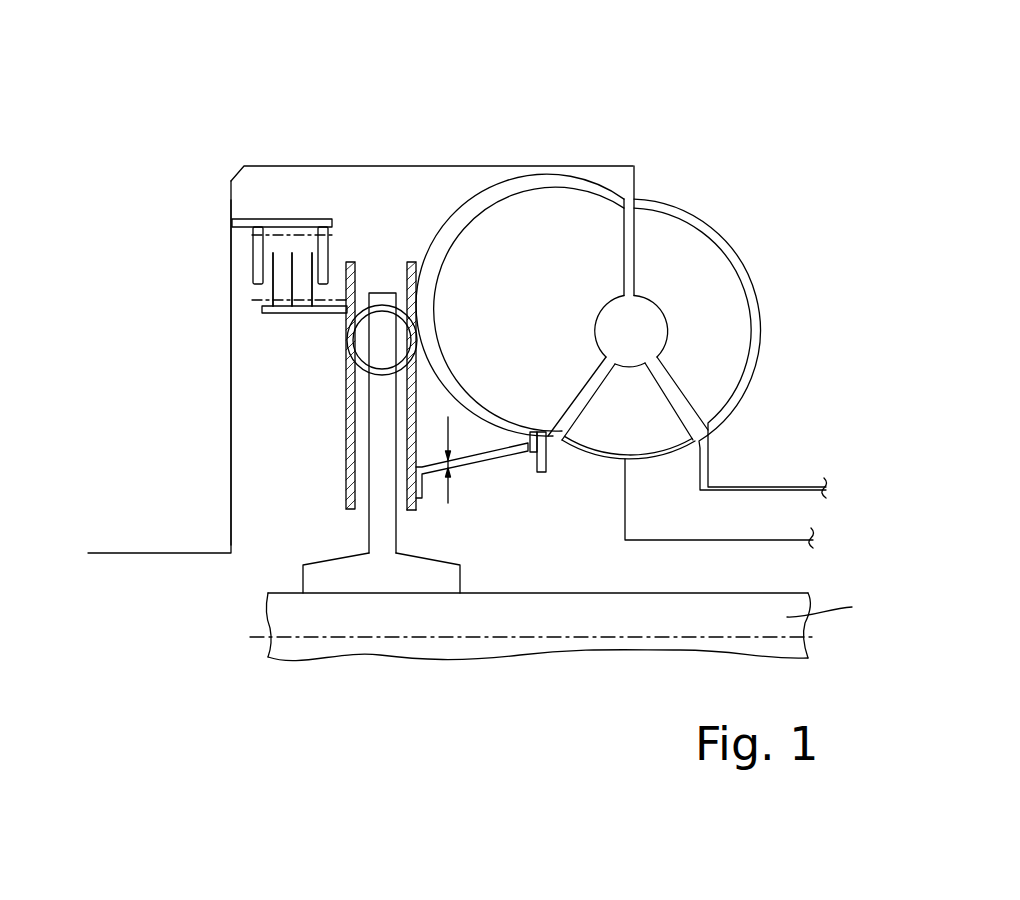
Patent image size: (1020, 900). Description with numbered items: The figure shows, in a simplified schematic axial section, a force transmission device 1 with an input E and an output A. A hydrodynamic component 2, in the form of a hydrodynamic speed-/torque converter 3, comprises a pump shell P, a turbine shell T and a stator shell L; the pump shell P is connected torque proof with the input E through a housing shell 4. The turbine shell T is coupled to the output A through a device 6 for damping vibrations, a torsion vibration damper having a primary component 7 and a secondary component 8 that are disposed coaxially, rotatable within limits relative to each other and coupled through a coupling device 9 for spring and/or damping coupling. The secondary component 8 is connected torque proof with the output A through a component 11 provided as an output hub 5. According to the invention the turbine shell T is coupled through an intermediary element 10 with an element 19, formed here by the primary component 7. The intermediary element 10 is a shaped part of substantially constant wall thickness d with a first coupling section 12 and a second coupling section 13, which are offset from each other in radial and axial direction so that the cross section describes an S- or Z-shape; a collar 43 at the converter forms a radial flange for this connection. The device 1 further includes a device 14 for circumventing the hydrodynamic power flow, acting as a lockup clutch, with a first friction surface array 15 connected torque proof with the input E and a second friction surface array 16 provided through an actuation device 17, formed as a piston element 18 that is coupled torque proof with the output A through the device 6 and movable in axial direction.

The force transmission device 1 is at (607, 108).
The hydrodynamic component 2 is at (621, 333).
The hydrodynamic speed-/torque converter 3 is at (722, 208).
The housing shell 4 is at (370, 166).
The output hub 5 is at (435, 573).
The device for damping vibrations 6 is at (392, 268).
The primary component 7 is at (450, 371).
The secondary component 8 is at (380, 534).
The coupling device 9 is at (410, 340).
The intermediary element 10 is at (497, 484).
The component connected torque proof with the output 11 is at (443, 582).
The first coupling section 12 is at (516, 432).
The second coupling section 13 is at (420, 524).
The device for circumventing the hydrodynamic power flow 14 is at (274, 208).
The first friction surface array 15 is at (222, 208).
The second friction surface array 16 is at (300, 320).
The actuation device 17 is at (328, 236).
The piston element 18 is at (320, 255).
The element coupled torque proof to the output 19 is at (410, 288).
The collar 43 is at (547, 465).